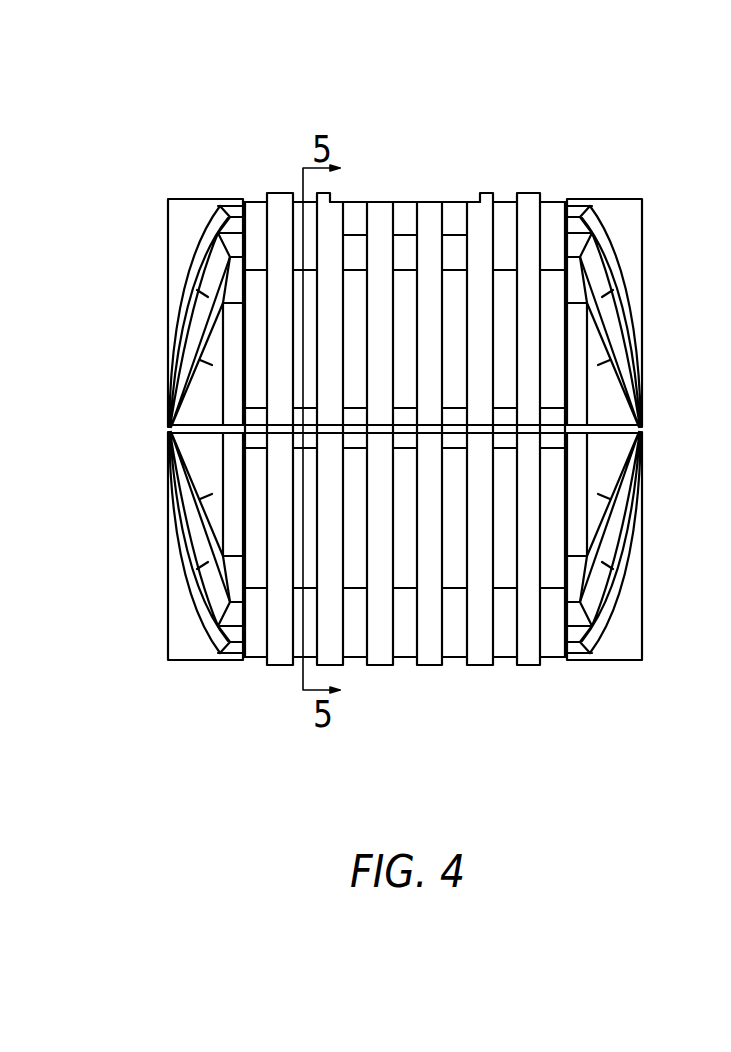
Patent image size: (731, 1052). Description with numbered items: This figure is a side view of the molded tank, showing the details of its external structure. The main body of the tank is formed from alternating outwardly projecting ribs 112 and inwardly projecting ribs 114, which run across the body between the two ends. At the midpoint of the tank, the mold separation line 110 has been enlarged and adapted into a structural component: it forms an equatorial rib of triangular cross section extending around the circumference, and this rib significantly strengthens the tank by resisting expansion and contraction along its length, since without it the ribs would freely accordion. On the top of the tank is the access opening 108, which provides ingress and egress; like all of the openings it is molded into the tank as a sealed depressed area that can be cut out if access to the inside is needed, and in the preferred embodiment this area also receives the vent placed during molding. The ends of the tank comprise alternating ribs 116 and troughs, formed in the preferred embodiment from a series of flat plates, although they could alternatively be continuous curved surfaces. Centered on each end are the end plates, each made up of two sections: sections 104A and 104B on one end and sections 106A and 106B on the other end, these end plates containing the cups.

The end plate section 104A is at (167, 218).
The end plate section 104B is at (168, 618).
The end plate section 106A is at (582, 201).
The end plate section 106B is at (588, 668).
The access opening 108 is at (428, 200).
The mold separation line 110 is at (0, 378).
The outwardly projecting ribs 112 is at (518, 668).
The inwardly projecting ribs 114 is at (260, 202).
The end ribs 116 is at (217, 662).